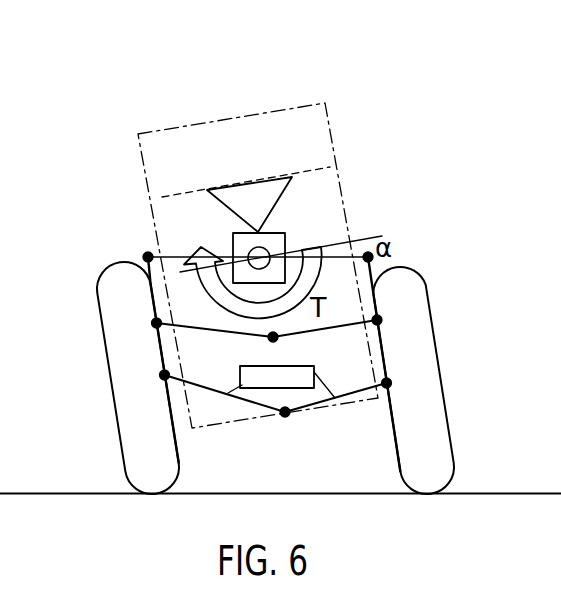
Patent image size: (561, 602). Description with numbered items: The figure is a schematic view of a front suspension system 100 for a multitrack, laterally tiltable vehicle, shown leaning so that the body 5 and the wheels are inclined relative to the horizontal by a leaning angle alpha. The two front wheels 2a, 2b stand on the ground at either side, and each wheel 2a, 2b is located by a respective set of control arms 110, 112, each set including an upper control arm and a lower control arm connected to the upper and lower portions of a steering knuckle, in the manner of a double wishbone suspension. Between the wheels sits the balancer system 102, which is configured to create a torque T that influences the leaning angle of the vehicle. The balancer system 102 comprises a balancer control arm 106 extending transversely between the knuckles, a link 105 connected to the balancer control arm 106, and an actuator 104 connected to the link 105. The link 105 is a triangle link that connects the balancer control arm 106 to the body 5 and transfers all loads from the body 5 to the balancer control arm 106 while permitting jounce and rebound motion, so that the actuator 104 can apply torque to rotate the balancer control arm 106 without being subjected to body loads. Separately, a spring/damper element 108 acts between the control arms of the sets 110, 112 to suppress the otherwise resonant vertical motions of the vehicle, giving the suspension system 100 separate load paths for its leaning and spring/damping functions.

The front suspension system 100 is at (434, 69).
The body 5 is at (237, 115).
The balancer system 102 is at (313, 209).
The actuator 104 is at (238, 243).
The link 105 is at (210, 189).
The balancer control arm 106 is at (167, 257).
The spring/damper element 108 is at (314, 366).
The first set of control arms 110 is at (190, 323).
The second set of control arms 112 is at (343, 322).
The front wheel 2a is at (152, 484).
The front wheel 2b is at (433, 485).